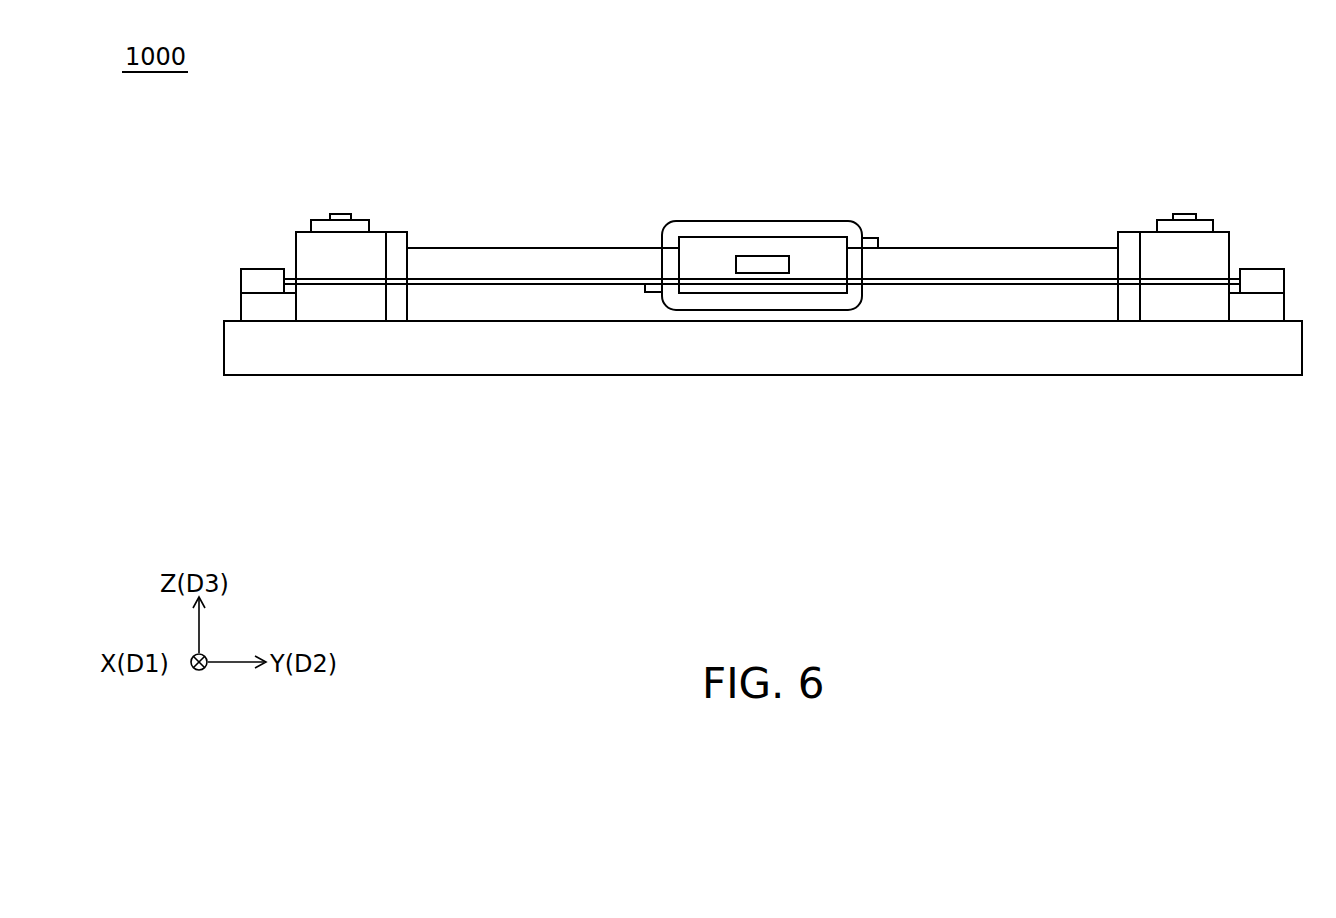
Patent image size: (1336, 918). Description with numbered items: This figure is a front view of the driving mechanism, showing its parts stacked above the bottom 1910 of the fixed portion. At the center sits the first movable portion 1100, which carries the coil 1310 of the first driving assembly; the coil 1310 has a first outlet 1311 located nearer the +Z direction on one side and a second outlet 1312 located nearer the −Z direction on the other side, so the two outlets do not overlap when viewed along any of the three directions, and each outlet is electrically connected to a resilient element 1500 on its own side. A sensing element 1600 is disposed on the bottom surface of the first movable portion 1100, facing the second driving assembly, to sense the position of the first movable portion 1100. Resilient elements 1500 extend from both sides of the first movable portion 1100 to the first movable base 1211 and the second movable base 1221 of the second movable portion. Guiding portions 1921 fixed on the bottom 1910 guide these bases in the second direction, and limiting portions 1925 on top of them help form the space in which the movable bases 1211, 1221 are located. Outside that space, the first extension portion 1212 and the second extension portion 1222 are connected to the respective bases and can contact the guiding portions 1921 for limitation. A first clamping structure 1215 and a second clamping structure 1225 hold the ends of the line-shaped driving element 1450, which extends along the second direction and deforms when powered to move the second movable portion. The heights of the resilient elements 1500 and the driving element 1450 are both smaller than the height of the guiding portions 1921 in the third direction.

The first movable portion 1100 is at (820, 250).
The coil 1310 is at (704, 228).
The first outlet 1311 is at (875, 240).
The second outlet 1312 is at (653, 292).
The driving element 1450 is at (520, 285).
The resilient element 1500 is at (541, 253).
The sensing element 1600 is at (763, 265).
The bottom 1910 is at (900, 360).
The guiding portion 1921 is at (320, 238).
The limiting portion 1925 is at (358, 226).
The first movable base 1211 is at (1130, 310).
The first extension portion 1212 is at (1256, 312).
The first clamping structure 1215 is at (1262, 277).
The second movable base 1221 is at (397, 310).
The second extension portion 1222 is at (267, 313).
The second clamping structure 1225 is at (262, 277).